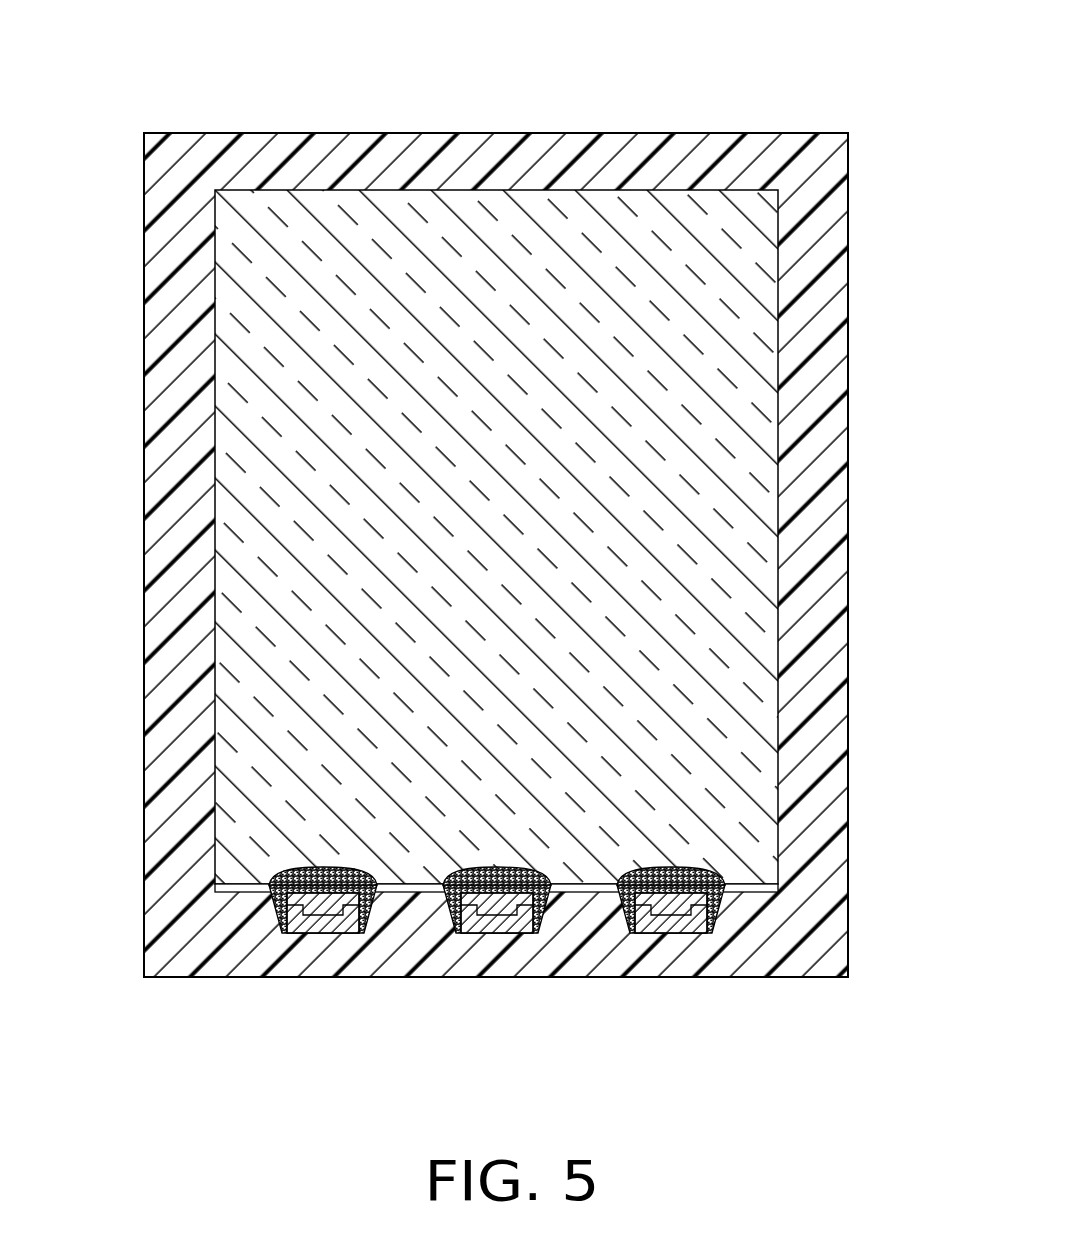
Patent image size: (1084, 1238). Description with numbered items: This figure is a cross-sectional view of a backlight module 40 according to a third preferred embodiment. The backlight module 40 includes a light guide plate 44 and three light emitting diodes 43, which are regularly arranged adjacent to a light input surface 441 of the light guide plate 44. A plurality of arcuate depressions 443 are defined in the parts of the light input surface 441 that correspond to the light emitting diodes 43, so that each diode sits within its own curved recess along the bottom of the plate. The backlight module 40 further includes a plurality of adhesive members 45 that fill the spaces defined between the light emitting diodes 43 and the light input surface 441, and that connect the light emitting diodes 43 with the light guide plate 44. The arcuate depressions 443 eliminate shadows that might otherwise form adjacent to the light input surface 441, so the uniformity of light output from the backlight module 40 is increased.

The backlight module 40 is at (502, 522).
The light emitting diode 43 is at (458, 927).
The light guide plate 44 is at (630, 548).
The adhesive member 45 is at (718, 905).
The light input surface 441 is at (766, 897).
The arcuate depression 443 is at (318, 867).